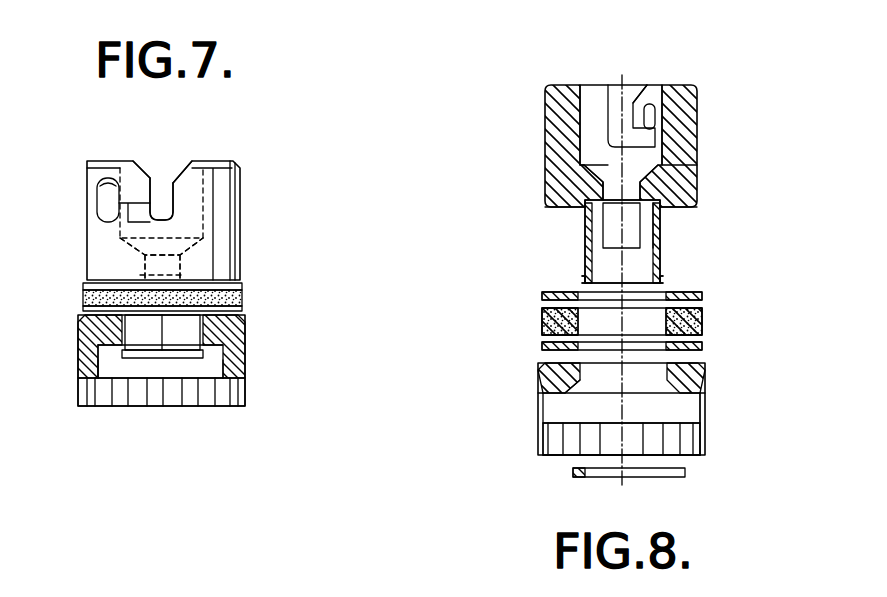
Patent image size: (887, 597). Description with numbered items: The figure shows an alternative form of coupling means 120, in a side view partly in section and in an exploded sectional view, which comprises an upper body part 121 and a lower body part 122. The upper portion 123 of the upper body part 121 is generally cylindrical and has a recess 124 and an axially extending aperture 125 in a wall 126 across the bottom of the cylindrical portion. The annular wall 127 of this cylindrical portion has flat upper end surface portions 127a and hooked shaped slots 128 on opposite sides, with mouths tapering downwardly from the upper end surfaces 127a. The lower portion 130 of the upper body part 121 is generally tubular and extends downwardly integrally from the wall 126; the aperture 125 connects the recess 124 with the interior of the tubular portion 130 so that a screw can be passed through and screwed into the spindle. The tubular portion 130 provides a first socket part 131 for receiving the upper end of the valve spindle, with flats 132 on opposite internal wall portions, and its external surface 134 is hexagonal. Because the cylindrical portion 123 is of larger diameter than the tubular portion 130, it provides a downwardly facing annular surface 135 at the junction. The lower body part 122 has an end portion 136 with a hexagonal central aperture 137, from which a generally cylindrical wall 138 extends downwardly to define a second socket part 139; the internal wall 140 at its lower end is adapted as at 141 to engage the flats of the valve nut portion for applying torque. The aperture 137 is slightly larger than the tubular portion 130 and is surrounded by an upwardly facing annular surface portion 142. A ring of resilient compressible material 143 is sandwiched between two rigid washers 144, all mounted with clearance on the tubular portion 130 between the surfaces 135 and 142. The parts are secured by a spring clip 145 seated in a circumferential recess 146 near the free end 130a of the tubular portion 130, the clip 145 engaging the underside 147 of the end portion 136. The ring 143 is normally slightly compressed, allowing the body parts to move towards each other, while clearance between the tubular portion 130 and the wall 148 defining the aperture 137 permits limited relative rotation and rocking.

In FIG. 7, the coupling means 120 is at (247, 245).
In FIG. 8, the upper body part 121 is at (704, 150).
In FIG. 8, the lower body part 122 is at (712, 423).
In FIG. 8, the upper portion 123 is at (678, 118).
In FIG. 7, the recess 124 is at (188, 158).
In FIG. 8, the recess 124 is at (588, 105).
In FIG. 7, the axially extending aperture 125 is at (145, 263).
In FIG. 8, the axially extending aperture 125 is at (590, 178).
In FIG. 7, the wall 126 is at (183, 266).
In FIG. 8, the wall 126 is at (672, 190).
In FIG. 7, the annular wall 127 is at (97, 185).
In FIG. 8, the annular wall 127 is at (693, 98).
In FIG. 7, the flat upper end surface portions 127a is at (108, 158).
In FIG. 8, the flat upper end surface portions 127a is at (575, 105).
In FIG. 7, the hooked shaped slots 128 is at (160, 183).
In FIG. 8, the hooked shaped slots 128 is at (612, 115).
In FIG. 8, the lower tubular portion 130 is at (585, 255).
In FIG. 8, the free end 130a is at (660, 280).
In FIG. 8, the first socket part 131 is at (650, 250).
In FIG. 8, the flats 132 is at (603, 226).
In FIG. 7, the external surface 134 is at (140, 330).
In FIG. 8, the downwardly facing annular surface 135 is at (556, 185).
In FIG. 8, the end portion 136 is at (702, 345).
In FIG. 8, the central aperture 137 is at (590, 378).
In FIG. 8, the cylindrical wall 138 is at (690, 432).
In FIG. 7, the second socket part 139 is at (208, 383).
In FIG. 8, the second socket part 139 is at (560, 420).
In FIG. 7, the internal wall 140 is at (222, 365).
In FIG. 8, the internal wall 140 is at (660, 420).
In FIG. 7, the nut engaging formation 141 is at (172, 408).
In FIG. 8, the nut engaging formation 141 is at (672, 440).
In FIG. 8, the upwardly facing annular surface portion 142 is at (560, 358).
In FIG. 7, the ring of resilient compressible material 143 is at (83, 298).
In FIG. 8, the ring of resilient compressible material 143 is at (702, 296).
In FIG. 8, the rigid washers 144 is at (560, 344).
In FIG. 7, the spring clip 145 is at (112, 360).
In FIG. 8, the spring clip 145 is at (573, 474).
In FIG. 8, the circumferential recess 146 is at (590, 283).
In FIG. 7, the underside 147 is at (100, 358).
In FIG. 8, the underside 147 is at (572, 410).
In FIG. 8, the wall 148 is at (678, 378).